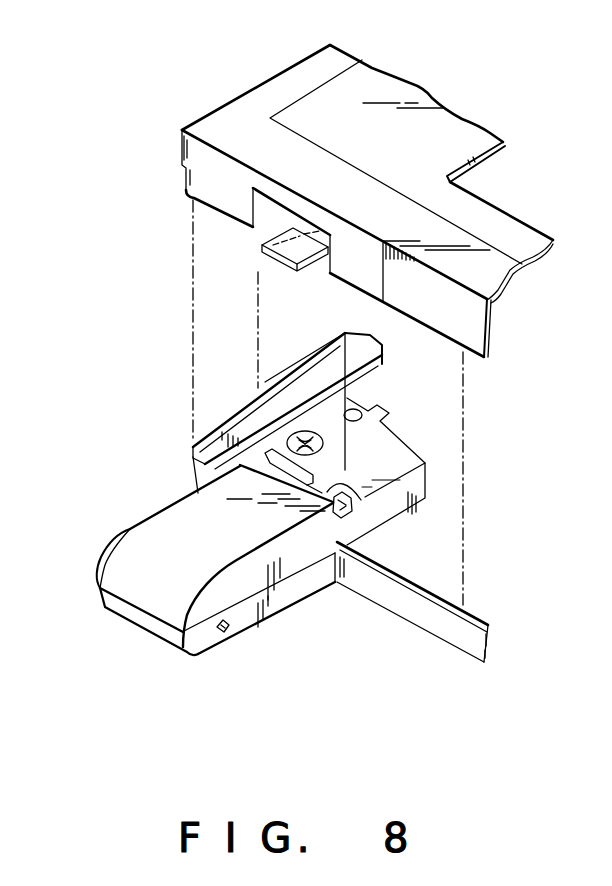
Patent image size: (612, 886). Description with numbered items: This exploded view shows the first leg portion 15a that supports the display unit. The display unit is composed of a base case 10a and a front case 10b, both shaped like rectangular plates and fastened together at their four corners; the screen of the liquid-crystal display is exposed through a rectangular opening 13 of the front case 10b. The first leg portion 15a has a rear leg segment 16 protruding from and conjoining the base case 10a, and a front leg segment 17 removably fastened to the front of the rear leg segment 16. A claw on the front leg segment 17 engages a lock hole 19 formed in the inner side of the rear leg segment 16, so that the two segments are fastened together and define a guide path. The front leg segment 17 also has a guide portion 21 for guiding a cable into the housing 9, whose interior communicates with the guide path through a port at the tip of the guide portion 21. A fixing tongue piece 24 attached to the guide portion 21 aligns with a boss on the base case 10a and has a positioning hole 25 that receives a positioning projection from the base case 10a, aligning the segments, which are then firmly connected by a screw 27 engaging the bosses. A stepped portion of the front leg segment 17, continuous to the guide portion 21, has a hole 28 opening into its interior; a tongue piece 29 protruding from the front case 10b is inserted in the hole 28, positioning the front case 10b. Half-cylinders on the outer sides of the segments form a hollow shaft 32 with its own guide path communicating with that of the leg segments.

The housing 9 is at (244, 78).
The front case 10b is at (395, 90).
The rectangular opening 13 is at (488, 158).
The tongue piece 29 is at (266, 247).
The screw 27 is at (300, 431).
The positioning hole 25 is at (386, 381).
The fixing tongue piece 24 is at (364, 411).
The guide portion 21 is at (390, 458).
The front leg segment 17 is at (178, 515).
The hollow shaft 32 is at (103, 549).
The hole 28 is at (355, 492).
The rear leg segment 16 is at (300, 592).
The base case 10a is at (420, 612).
The first leg portion 15a is at (153, 642).
The lock hole 19 is at (224, 634).